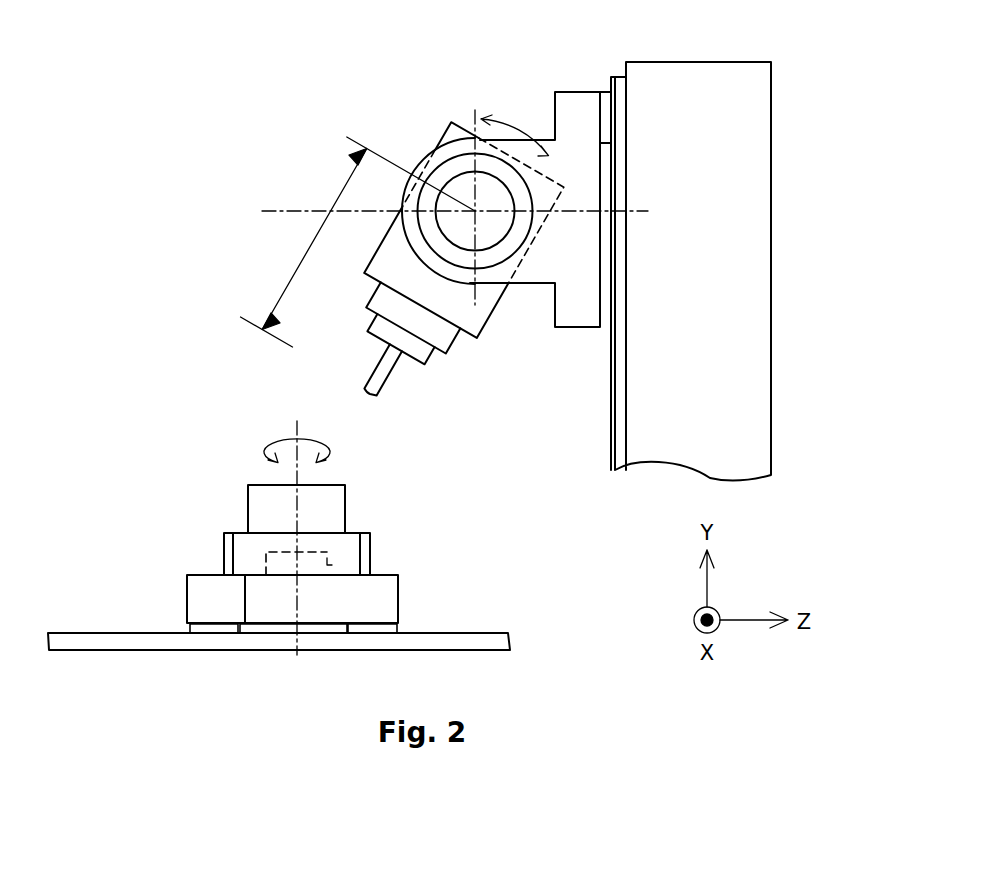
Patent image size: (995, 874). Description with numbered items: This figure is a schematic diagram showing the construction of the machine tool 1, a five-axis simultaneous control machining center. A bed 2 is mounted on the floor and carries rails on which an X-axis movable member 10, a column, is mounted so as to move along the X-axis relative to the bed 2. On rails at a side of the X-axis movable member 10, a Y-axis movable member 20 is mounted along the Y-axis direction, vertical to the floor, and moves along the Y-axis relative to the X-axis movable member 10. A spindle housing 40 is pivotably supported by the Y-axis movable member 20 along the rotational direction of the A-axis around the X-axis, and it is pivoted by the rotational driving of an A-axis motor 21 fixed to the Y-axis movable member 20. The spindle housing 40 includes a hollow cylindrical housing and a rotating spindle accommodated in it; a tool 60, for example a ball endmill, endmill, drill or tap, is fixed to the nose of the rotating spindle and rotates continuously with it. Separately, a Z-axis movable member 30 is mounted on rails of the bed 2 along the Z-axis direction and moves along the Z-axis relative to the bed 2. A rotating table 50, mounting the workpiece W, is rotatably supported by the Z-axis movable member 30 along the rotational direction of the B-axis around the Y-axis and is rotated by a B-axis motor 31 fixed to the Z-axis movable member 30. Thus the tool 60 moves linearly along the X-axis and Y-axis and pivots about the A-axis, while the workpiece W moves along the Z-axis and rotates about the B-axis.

The machine tool 1 is at (203, 151).
The bed 2 is at (461, 687).
The X-axis movable member 10 is at (772, 182).
The Y-axis movable member 20 is at (575, 92).
The A-axis motor 21 is at (452, 156).
The Z-axis movable member 30 is at (187, 606).
The B-axis motor 31 is at (327, 562).
The spindle housing 40 is at (486, 322).
The rotating table 50 is at (224, 560).
The tool 60 is at (393, 375).
The workpiece W is at (248, 510).